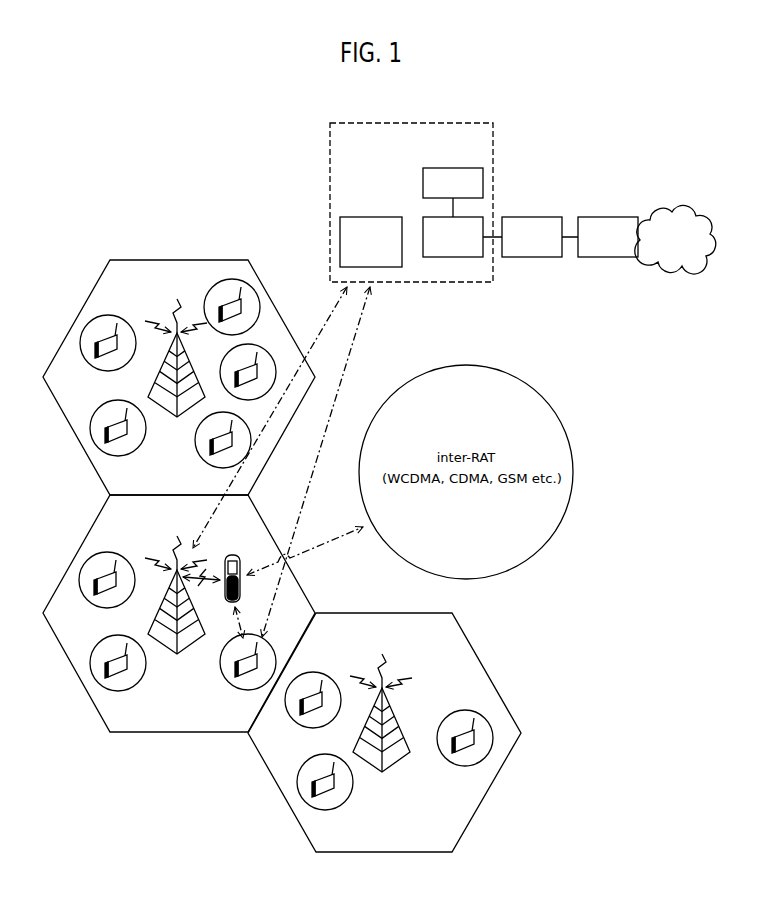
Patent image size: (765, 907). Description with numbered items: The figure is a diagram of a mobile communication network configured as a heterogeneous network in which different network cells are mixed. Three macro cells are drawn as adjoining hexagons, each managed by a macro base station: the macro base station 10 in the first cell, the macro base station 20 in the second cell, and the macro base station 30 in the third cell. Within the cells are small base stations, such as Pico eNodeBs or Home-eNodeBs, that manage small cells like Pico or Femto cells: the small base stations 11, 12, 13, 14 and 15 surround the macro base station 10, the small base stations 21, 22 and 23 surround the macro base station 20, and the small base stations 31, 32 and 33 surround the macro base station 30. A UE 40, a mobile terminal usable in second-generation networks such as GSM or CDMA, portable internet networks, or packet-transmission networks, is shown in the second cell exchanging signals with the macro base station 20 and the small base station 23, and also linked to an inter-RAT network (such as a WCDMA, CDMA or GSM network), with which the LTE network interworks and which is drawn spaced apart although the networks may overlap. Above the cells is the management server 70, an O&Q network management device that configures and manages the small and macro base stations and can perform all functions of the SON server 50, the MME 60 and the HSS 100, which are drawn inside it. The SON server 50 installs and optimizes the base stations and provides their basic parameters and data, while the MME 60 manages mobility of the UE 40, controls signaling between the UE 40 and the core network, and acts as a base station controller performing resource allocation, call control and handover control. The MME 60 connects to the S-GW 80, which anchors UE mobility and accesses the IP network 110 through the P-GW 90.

The macro base station 10 is at (165, 417).
The small base station 11 is at (103, 340).
The small base station 12 is at (105, 430).
The small base station 13 is at (215, 453).
The small base station 14 is at (255, 365).
The small base station 15 is at (230, 300).
The macro base station 20 is at (165, 654).
The small base station 21 is at (100, 578).
The small base station 22 is at (110, 670).
The small base station 23 is at (240, 668).
The macro base station 30 is at (373, 772).
The small base station 31 is at (303, 707).
The small base station 32 is at (313, 787).
The small base station 33 is at (473, 752).
The UE 40 is at (231, 555).
The SON server 50 is at (370, 217).
The MME 60 is at (453, 257).
The management server 70 is at (410, 123).
The S-GW 80 is at (534, 257).
The P-GW 90 is at (609, 257).
The HSS 100 is at (483, 183).
The IP network 110 is at (670, 208).